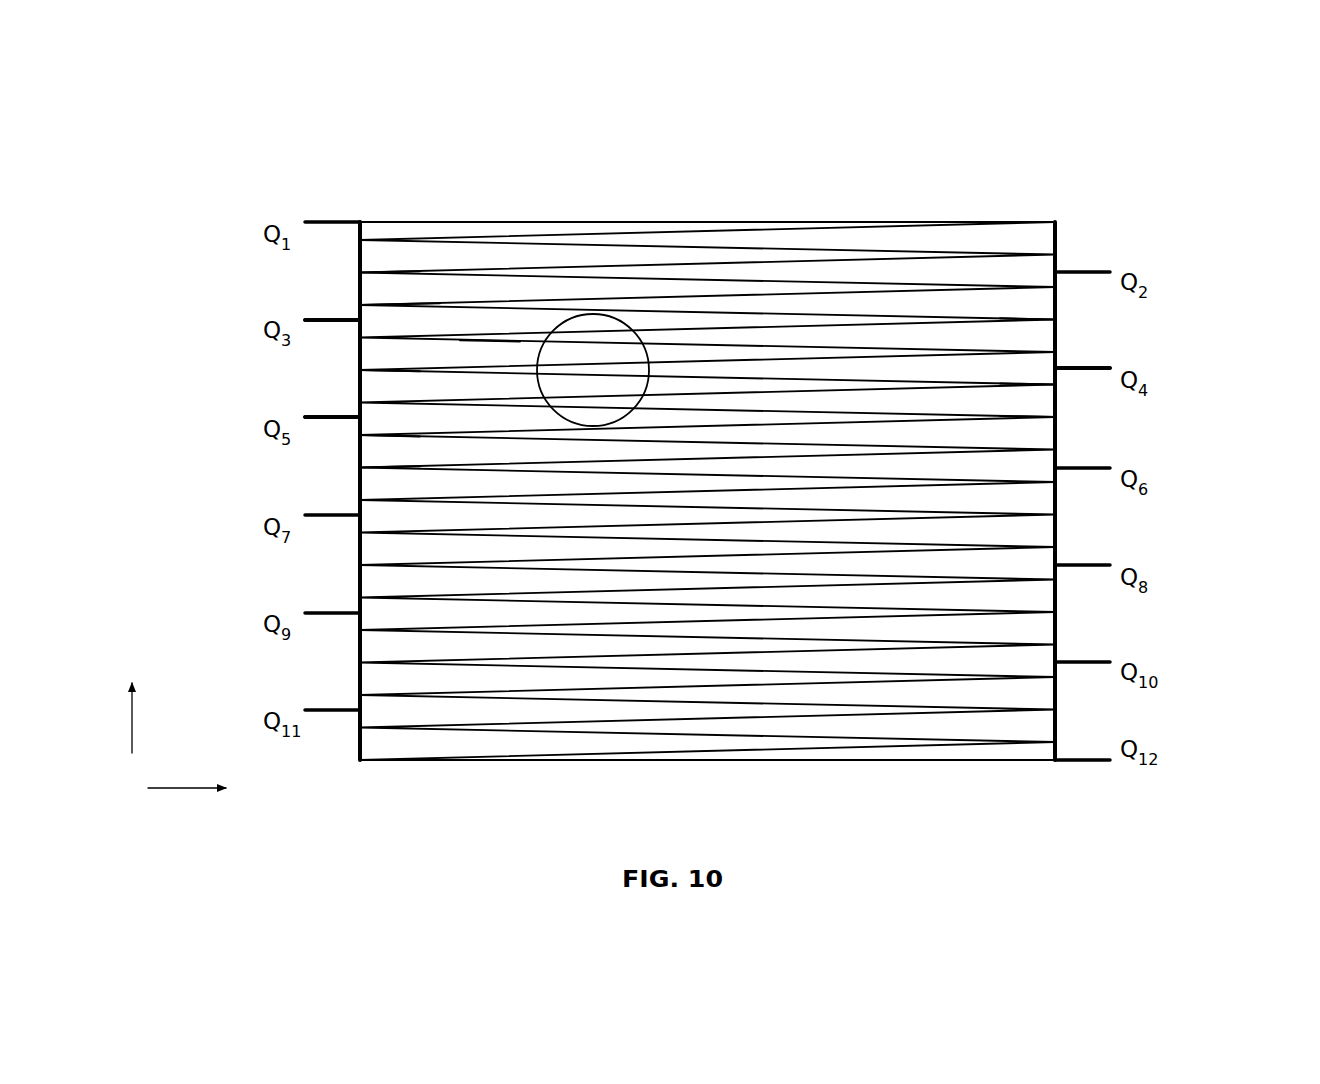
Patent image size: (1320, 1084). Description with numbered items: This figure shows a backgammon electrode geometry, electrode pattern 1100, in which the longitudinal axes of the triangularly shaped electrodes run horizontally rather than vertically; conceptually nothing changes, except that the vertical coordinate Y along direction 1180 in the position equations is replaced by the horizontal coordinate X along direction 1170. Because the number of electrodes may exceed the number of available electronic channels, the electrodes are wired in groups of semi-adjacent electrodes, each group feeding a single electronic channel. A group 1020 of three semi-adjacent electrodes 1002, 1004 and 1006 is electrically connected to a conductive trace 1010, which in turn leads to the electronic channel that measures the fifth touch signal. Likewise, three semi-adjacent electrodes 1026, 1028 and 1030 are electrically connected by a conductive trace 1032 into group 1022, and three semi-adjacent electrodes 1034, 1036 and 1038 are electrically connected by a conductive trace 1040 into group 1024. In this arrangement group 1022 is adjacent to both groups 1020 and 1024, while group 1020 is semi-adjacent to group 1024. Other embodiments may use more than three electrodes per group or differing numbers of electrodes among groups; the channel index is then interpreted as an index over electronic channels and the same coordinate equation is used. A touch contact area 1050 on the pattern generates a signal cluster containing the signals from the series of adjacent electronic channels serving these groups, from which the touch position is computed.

The electrode pattern 1100 is at (821, 180).
The touch contact area 1050 is at (612, 315).
The semi-adjacent electrode 1034 is at (377, 282).
The semi-adjacent electrode 1036 is at (415, 318).
The semi-adjacent electrode 1038 is at (480, 357).
The semi-adjacent electrode 1026 is at (1030, 333).
The conductive trace 1040 is at (337, 318).
The group 1024 is at (293, 309).
The semi-adjacent electrode 1002 is at (380, 382).
The conductive trace 1010 is at (330, 417).
The group 1020 is at (236, 413).
The semi-adjacent electrode 1004 is at (383, 448).
The semi-adjacent electrode 1006 is at (495, 417).
The conductive trace 1032 is at (1092, 367).
The group 1022 is at (1143, 358).
The semi-adjacent electrode 1028 is at (1040, 373).
The semi-adjacent electrode 1030 is at (1040, 403).
The direction 1180 is at (132, 726).
The direction 1170 is at (180, 788).